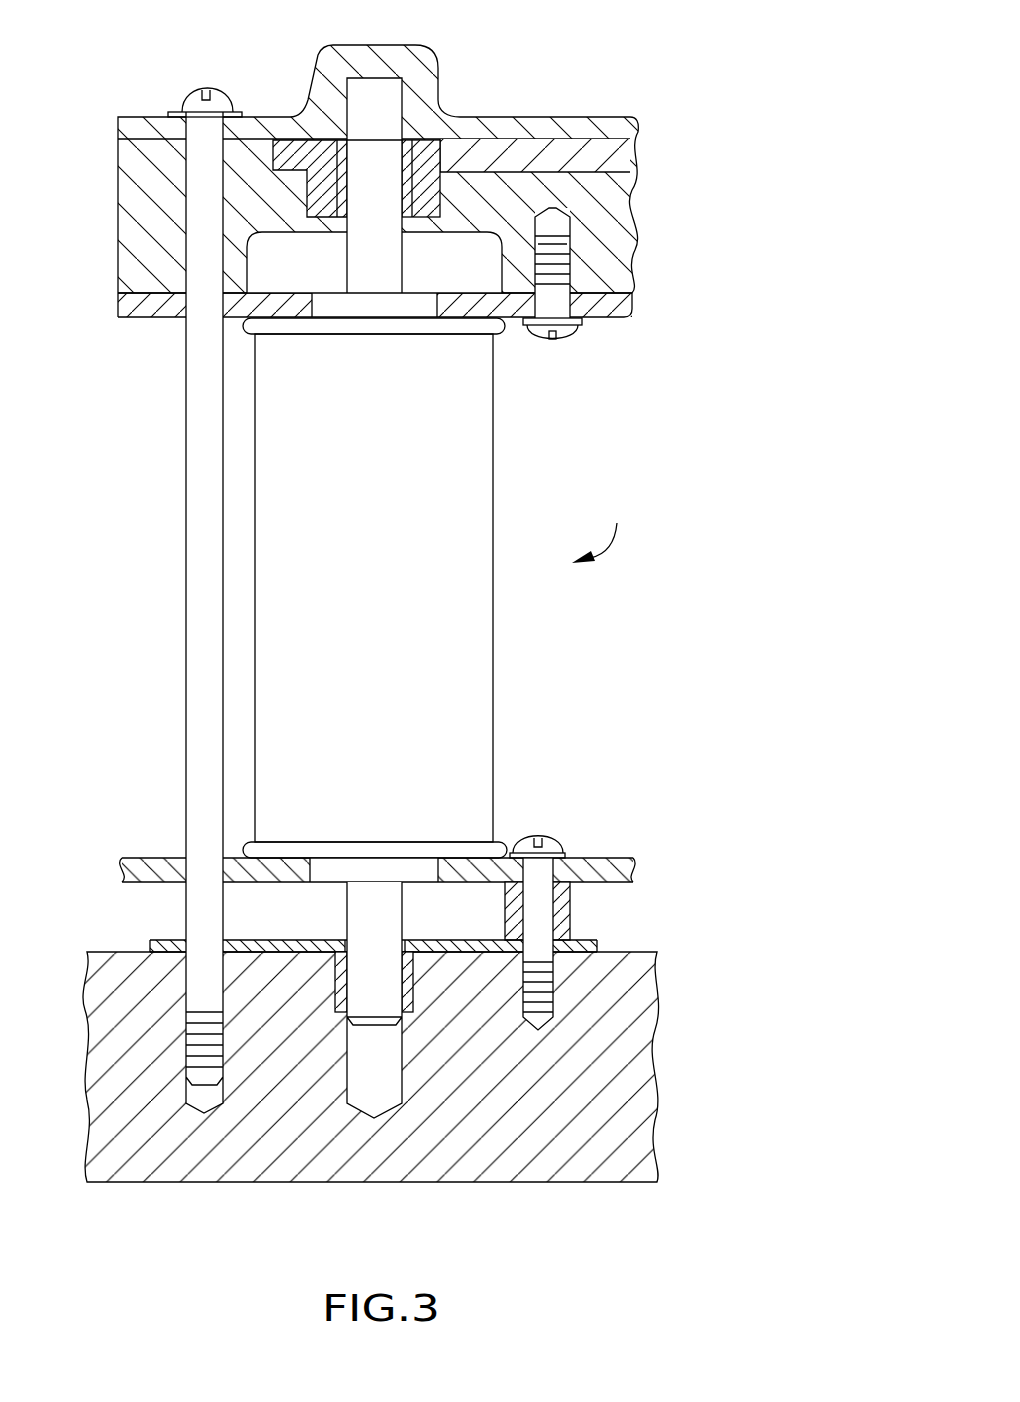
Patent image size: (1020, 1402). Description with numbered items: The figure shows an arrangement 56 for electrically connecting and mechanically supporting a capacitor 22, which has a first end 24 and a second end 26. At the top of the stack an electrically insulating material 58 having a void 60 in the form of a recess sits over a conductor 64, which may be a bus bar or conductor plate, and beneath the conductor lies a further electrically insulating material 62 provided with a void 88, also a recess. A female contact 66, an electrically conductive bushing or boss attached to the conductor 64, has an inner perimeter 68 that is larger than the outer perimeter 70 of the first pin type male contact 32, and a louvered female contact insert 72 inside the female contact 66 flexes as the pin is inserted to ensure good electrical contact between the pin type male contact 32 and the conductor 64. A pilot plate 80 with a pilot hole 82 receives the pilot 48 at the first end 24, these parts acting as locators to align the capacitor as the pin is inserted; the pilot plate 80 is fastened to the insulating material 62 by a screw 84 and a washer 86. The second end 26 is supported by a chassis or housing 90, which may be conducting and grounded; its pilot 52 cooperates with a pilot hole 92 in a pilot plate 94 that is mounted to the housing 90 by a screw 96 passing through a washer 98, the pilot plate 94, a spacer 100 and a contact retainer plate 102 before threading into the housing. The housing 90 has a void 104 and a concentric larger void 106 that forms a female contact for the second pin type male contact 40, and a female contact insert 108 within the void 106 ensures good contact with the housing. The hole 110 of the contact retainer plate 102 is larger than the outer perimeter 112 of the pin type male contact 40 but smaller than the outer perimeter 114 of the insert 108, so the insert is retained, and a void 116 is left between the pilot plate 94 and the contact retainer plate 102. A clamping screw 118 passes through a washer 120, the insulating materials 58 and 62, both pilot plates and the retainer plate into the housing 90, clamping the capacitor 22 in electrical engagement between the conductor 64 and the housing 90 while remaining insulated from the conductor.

The capacitor 22 is at (494, 640).
The first end 24 is at (247, 323).
The second end 26 is at (512, 845).
The first pin type male contact 32 is at (367, 257).
The second pin type male contact 40 is at (358, 893).
The pilot 48 is at (330, 312).
The pilot 52 is at (388, 865).
The electrical connection and mechanical support arrangement 56 is at (602, 529).
The electrically insulating material 58 is at (396, 52).
The void 60 is at (403, 117).
The electrically insulating material 62 is at (614, 232).
The conductor 64 is at (620, 158).
The female contact 66 is at (300, 167).
The inner perimeter 68 is at (338, 153).
The outer perimeter 70 is at (400, 250).
The female contact insert 72 is at (313, 70).
The pilot plate 80 is at (127, 318).
The pilot hole 82 is at (450, 300).
The screw 84 is at (553, 338).
The washer 86 is at (582, 322).
The void 88 is at (260, 265).
The housing 90 is at (648, 1030).
The pilot hole 92 is at (437, 873).
The pilot plate 94 is at (122, 870).
The screw 96 is at (548, 840).
The washer 98 is at (560, 853).
The spacer 100 is at (570, 902).
The contact retainer plate 102 is at (597, 940).
The void 104 is at (400, 1103).
The void 106 is at (333, 1000).
The female contact insert 108 is at (405, 1005).
The hole 110 is at (392, 947).
The outer perimeter 112 is at (345, 906).
The outer perimeter 114 is at (333, 990).
The void 116 is at (228, 910).
The clamping screw 118 is at (187, 92).
The washer 120 is at (170, 111).